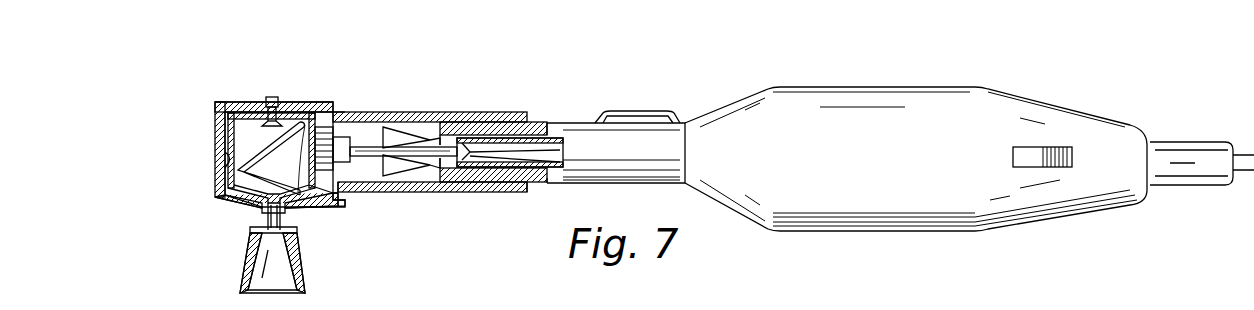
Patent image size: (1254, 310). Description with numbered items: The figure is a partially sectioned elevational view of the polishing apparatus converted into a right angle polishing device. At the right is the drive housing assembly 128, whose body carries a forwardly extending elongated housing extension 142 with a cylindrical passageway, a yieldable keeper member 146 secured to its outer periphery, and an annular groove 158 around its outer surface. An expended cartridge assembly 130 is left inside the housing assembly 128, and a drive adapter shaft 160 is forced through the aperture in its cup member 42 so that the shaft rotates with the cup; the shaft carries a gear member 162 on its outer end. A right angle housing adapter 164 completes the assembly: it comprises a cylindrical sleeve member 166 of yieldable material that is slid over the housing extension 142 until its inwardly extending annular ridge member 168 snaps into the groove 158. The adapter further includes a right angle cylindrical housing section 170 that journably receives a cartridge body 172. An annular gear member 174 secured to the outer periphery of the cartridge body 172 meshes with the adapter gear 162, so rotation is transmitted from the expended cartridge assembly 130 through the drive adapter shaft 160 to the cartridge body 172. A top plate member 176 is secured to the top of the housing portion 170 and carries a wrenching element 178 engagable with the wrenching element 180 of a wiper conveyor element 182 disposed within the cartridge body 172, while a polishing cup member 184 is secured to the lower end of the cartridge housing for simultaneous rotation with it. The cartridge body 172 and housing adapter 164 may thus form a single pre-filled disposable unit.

The cup member 42 is at (415, 127).
The drive housing assembly 128 is at (726, 91).
The cartridge assembly 130 is at (385, 115).
The housing extension 142 is at (577, 123).
The keeper member 146 is at (642, 112).
The annular groove 158 is at (527, 192).
The drive adapter shaft 160 is at (372, 160).
The gear member 162 is at (345, 190).
The right angle housing adapter 164 is at (346, 96).
The cylindrical sleeve member 166 is at (445, 192).
The annular ridge member 168 is at (500, 120).
The right angle cylindrical housing section 170 is at (213, 150).
The cartridge body 172 is at (229, 130).
The annular gear member 174 is at (223, 162).
The top plate member 176 is at (245, 102).
The fitting 178 is at (272, 97).
The wrenching element 180 is at (306, 111).
The wiper conveyor element 182 is at (316, 188).
The polishing cup member 184 is at (250, 262).